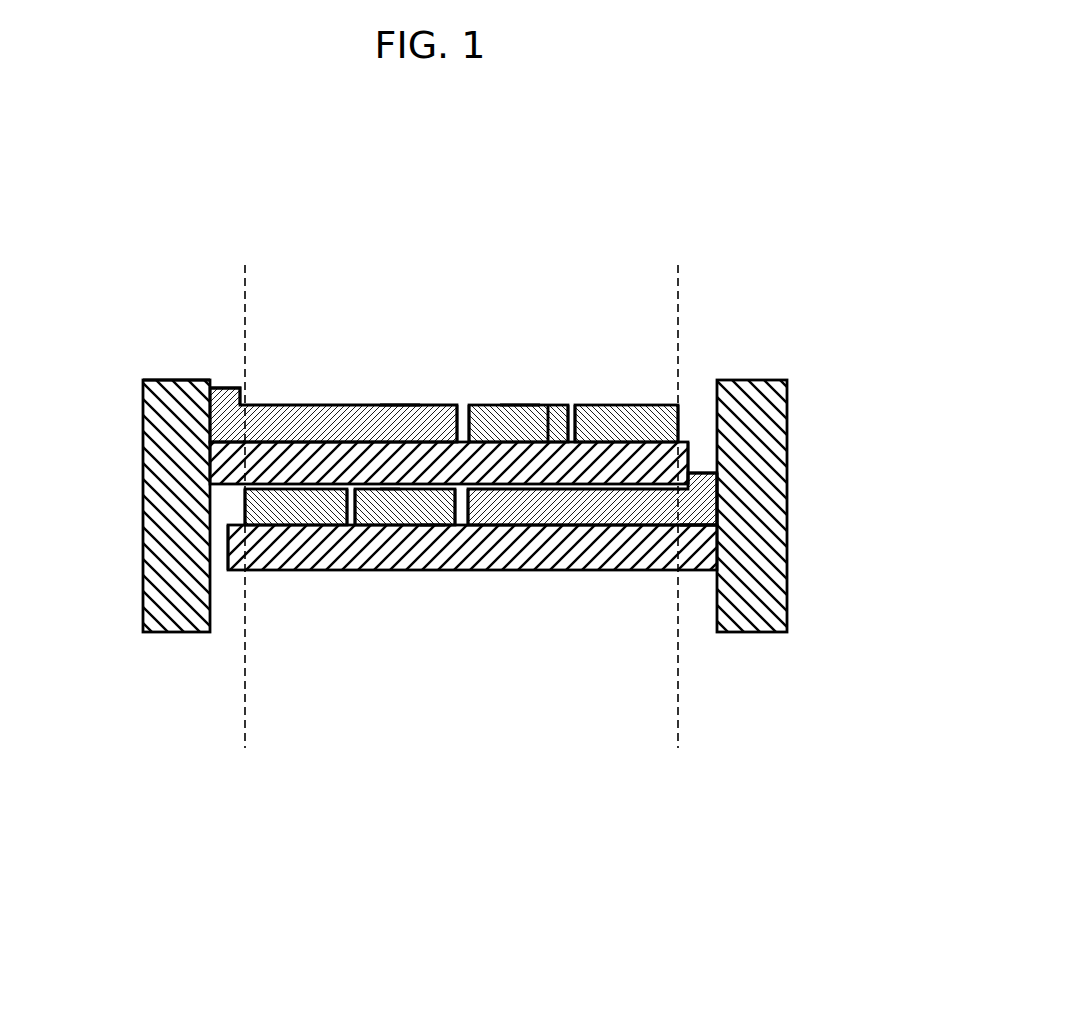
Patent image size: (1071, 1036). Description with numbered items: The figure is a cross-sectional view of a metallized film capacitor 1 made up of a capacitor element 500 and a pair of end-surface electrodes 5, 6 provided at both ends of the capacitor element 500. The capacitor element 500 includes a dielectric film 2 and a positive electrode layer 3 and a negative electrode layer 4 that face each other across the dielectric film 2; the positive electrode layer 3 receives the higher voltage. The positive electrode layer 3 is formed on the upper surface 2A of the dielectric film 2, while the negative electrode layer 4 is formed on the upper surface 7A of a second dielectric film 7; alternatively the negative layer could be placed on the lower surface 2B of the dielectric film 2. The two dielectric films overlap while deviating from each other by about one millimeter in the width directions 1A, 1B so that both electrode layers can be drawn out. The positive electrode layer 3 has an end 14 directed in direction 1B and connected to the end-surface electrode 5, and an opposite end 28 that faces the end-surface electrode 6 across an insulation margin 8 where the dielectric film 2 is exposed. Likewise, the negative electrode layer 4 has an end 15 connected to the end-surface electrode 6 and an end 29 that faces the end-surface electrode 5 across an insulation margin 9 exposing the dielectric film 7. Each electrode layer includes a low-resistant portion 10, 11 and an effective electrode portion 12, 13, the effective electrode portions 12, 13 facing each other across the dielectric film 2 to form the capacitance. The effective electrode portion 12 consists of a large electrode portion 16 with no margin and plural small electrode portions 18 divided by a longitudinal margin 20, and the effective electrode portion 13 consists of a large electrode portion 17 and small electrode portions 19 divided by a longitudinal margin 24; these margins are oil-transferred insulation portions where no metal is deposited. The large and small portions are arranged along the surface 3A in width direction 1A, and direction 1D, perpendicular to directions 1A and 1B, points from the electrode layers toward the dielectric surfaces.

The film capacitor 1 is at (730, 266).
The width direction 1A is at (190, 871).
The width direction 1B is at (175, 934).
The direction 1D is at (706, 783).
The dielectric film 2 is at (373, 457).
The upper surface of dielectric film 2A is at (548, 402).
The lower surface of dielectric film 2B is at (432, 527).
The positive electrode layer 3 is at (302, 415).
The surface of electrode layer 3A is at (523, 402).
The negative electrode layer 4 is at (540, 520).
The end-surface electrode 5 is at (165, 467).
The end-surface electrode 6 is at (767, 458).
The dielectric film 7 is at (692, 538).
The upper surface of dielectric film 7A is at (390, 520).
The insulation margin 8 is at (686, 443).
The insulation margin 9 is at (228, 530).
The low-resistant portion 10 is at (225, 395).
The low-resistant portion 11 is at (700, 475).
The effective electrode portion 12 is at (667, 279).
The effective electrode portion 13 is at (245, 735).
The end of positive electrode layer 14 is at (167, 402).
The end of negative electrode layer 15 is at (722, 482).
The large electrode portion 16 is at (402, 412).
The large electrode portion 17 is at (615, 517).
The small electrode portion 18 is at (505, 412).
The small electrode portion 19 is at (317, 507).
The longitudinal margin 20 is at (463, 412).
The longitudinal margin 24 is at (349, 517).
The end of positive electrode layer 28 is at (682, 410).
The end of negative electrode layer 29 is at (243, 503).
The capacitor element 500 is at (212, 232).